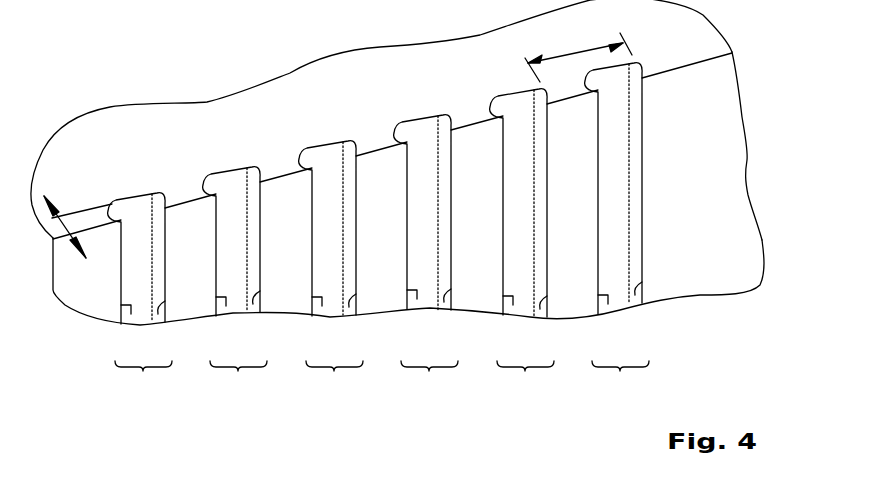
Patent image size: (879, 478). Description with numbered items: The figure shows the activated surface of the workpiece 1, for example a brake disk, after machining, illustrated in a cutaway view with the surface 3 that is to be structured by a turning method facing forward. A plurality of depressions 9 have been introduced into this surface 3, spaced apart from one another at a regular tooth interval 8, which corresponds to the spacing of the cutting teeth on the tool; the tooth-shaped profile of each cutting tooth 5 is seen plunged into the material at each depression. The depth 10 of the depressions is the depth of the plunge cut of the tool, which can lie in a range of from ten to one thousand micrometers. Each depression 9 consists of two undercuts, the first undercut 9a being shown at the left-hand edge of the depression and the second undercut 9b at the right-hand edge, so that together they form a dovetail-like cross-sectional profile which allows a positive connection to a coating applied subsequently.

The workpiece 1 is at (258, 107).
The surface 3 is at (723, 81).
The cutting tooth 5 is at (134, 199).
The tooth interval 8 is at (573, 53).
The depression 9 is at (382, 381).
The first undercut 9a is at (131, 314).
The second undercut 9b is at (158, 314).
The depth 10 is at (63, 214).